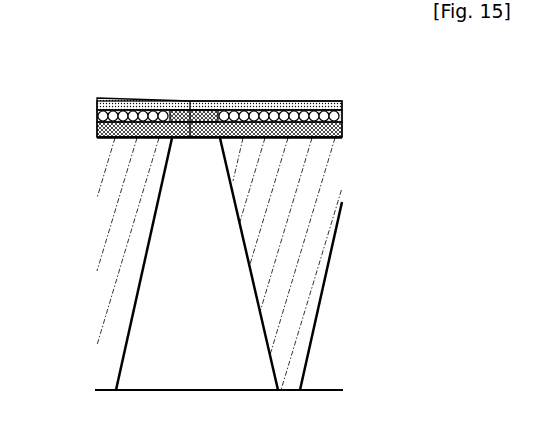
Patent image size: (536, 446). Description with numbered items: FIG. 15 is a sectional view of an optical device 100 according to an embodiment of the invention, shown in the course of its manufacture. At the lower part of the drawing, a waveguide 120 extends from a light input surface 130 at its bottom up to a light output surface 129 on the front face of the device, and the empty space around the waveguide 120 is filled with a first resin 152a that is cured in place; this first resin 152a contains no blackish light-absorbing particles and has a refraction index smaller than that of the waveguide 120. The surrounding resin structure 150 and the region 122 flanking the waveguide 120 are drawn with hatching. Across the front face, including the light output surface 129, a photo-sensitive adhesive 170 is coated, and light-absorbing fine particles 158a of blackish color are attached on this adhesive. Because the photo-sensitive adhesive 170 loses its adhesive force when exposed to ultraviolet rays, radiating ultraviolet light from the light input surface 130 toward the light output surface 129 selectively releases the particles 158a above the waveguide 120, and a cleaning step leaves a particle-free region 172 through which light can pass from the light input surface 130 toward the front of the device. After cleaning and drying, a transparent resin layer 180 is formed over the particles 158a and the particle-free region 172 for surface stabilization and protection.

The display device 100 is at (363, 89).
The light output surface 129 is at (190, 112).
The particle-free region 172 is at (208, 120).
The transparent resin layer 180 is at (253, 120).
The light-absorbing fine particles 158a is at (303, 118).
The photo-sensitive adhesive 170 is at (340, 128).
The first resin 152a is at (322, 232).
The partition member 150 is at (330, 340).
The light transmission region 122 is at (251, 272).
The waveguide 120 is at (179, 374).
The light input surface 130 is at (258, 390).